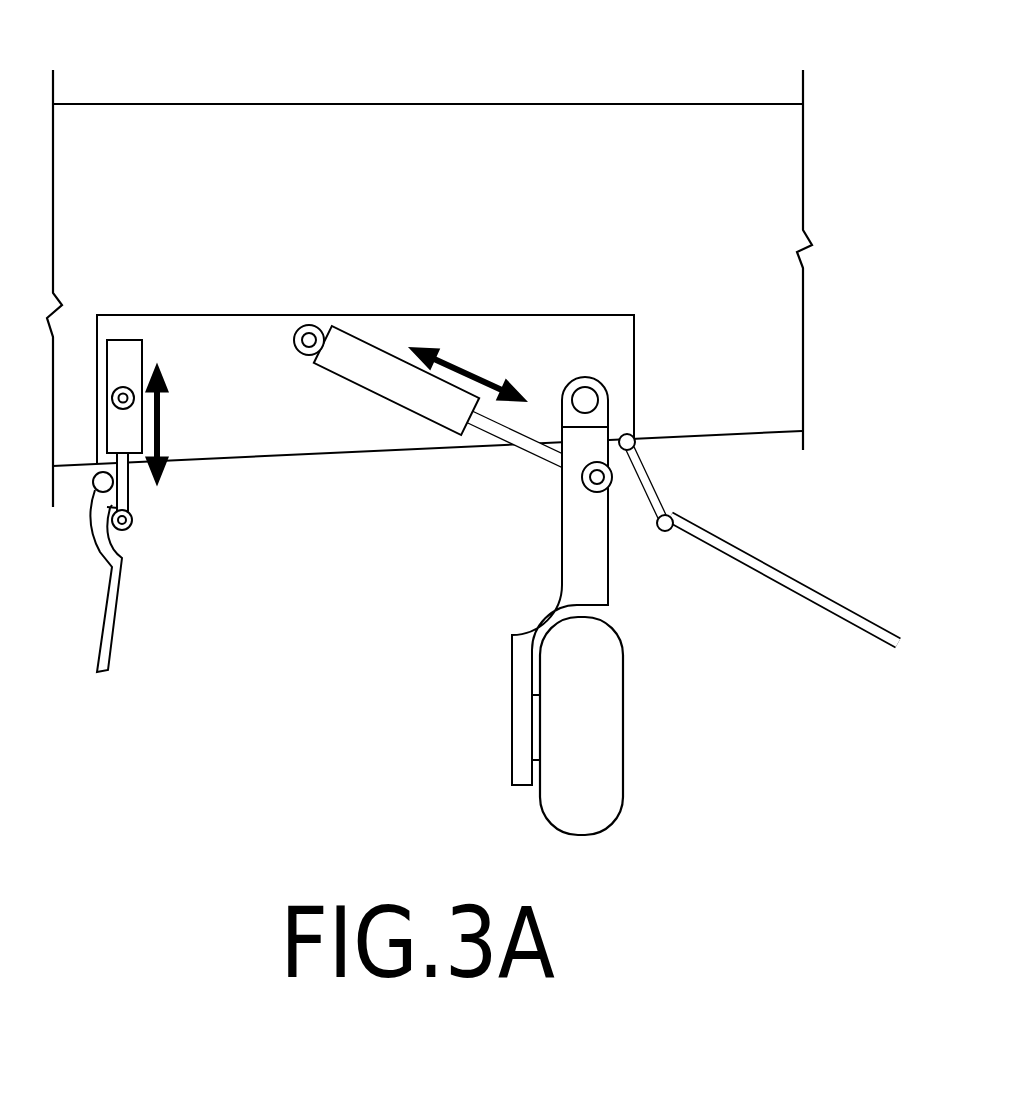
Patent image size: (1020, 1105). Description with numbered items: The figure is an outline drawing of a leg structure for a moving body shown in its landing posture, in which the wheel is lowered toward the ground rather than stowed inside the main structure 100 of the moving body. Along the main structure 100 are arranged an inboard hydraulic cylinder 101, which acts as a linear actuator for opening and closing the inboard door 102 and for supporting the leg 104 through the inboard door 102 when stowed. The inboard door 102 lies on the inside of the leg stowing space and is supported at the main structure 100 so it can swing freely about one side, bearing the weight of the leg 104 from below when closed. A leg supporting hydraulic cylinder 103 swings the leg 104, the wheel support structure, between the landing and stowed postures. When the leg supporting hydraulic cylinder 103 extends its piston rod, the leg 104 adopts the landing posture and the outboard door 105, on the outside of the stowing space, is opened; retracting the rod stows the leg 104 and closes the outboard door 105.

The main structure 100 is at (430, 140).
The inboard hydraulic cylinder 101 is at (147, 347).
The inboard door 102 is at (127, 592).
The leg supporting hydraulic cylinder 103 is at (368, 342).
The leg 104 is at (635, 698).
The outboard door 105 is at (773, 560).